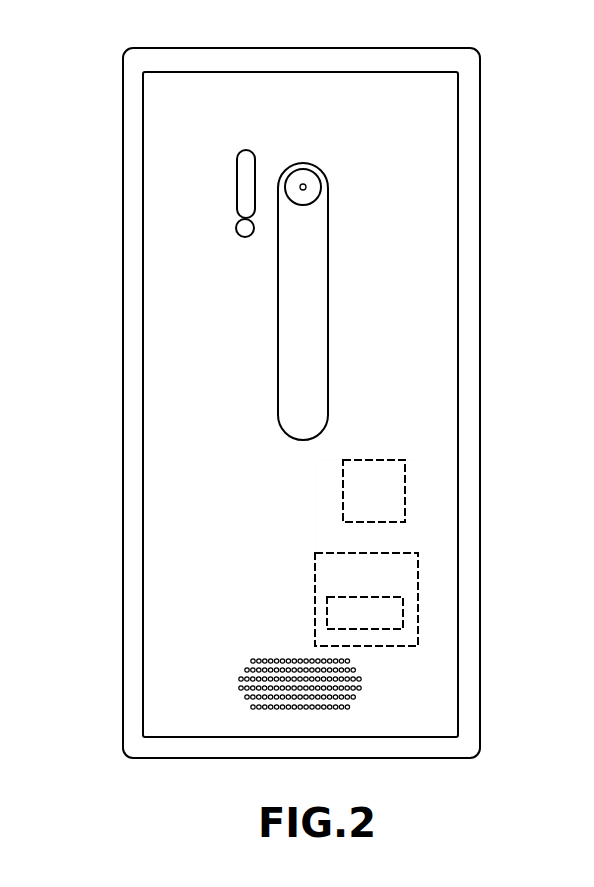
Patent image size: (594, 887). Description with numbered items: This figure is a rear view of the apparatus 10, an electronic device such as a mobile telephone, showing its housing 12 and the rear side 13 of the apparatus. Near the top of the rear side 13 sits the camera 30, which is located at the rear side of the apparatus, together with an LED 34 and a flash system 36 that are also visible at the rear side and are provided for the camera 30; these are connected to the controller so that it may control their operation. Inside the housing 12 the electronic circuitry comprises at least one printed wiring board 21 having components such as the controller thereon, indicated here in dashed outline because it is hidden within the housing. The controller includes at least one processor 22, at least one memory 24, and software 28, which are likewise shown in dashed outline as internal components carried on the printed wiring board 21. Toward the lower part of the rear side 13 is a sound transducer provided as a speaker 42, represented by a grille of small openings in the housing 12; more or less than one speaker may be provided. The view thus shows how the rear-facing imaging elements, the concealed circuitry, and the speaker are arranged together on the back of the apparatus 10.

The apparatus 10 is at (514, 120).
The housing 12 is at (466, 297).
The rear side 13 is at (442, 387).
The printed wiring board 21 is at (435, 528).
The processor 22 is at (405, 478).
The memory 24 is at (418, 565).
The software 28 is at (398, 618).
The camera 30 is at (312, 185).
The LED 34 is at (237, 232).
The flash system 36 is at (243, 195).
The speaker 42 is at (330, 692).